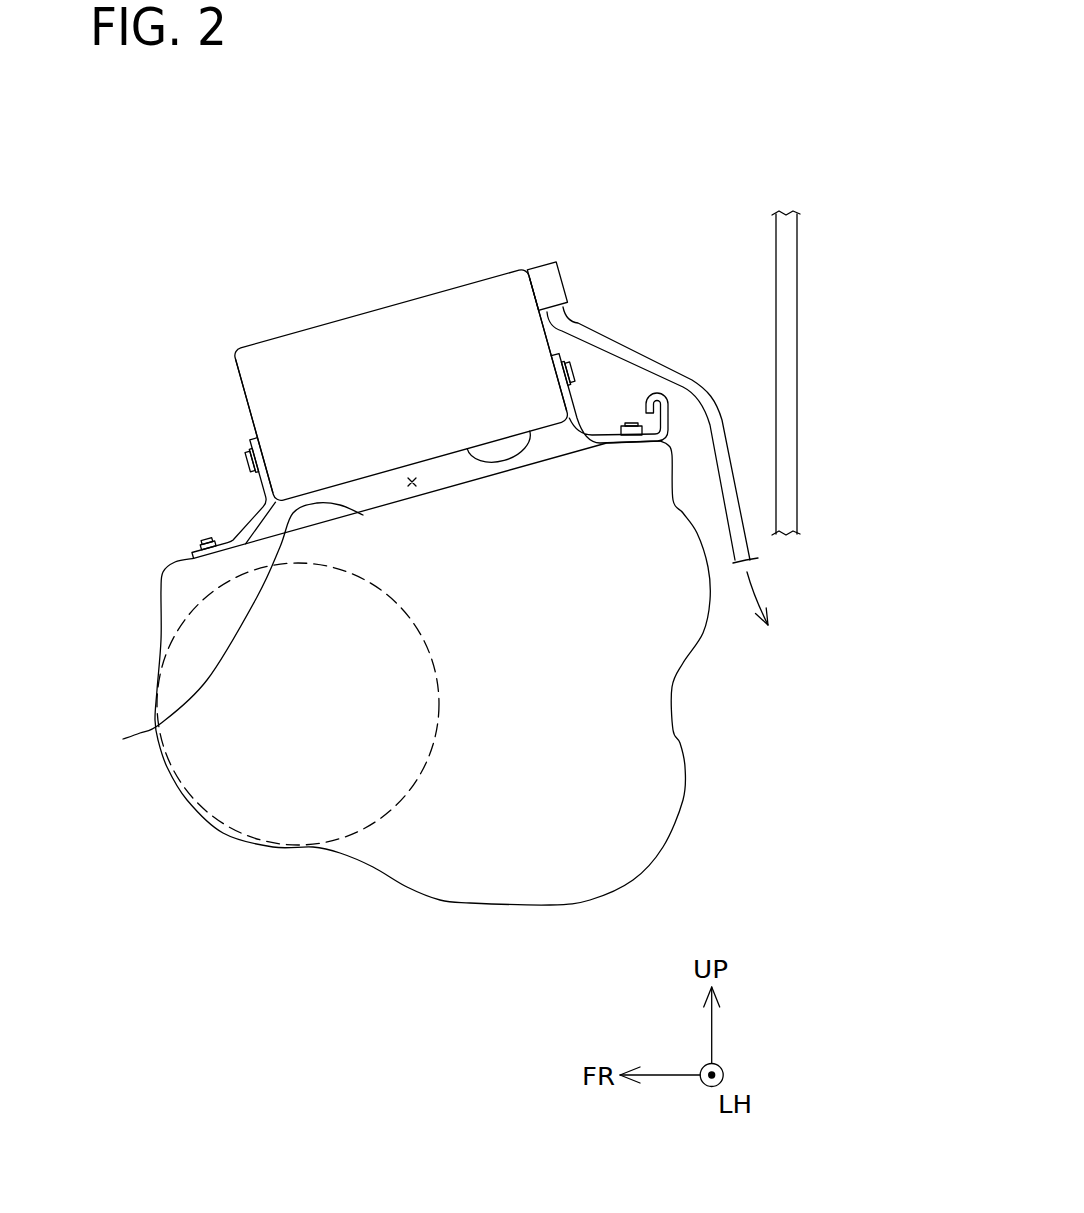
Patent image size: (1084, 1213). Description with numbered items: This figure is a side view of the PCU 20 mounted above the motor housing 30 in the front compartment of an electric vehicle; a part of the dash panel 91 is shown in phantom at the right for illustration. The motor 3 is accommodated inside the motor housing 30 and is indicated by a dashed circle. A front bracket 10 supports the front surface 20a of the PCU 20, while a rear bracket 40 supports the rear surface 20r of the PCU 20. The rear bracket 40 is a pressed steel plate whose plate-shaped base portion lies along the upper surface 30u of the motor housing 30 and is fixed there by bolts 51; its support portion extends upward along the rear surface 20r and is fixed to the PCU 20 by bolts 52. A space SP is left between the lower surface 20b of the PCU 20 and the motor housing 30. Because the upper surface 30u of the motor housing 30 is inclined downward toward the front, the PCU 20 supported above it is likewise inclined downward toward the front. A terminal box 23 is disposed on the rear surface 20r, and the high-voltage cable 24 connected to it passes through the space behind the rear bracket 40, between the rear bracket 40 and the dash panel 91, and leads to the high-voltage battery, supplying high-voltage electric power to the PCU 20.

The motor 3 is at (198, 784).
The front bracket 10 is at (243, 511).
The PCU 20 is at (283, 322).
The front surface 20a is at (240, 397).
The lower surface 20b is at (467, 447).
The rear surface 20r is at (537, 267).
The terminal box 23 is at (547, 285).
The cable 24 is at (563, 323).
The motor housing 30 is at (455, 913).
The upper surface 30u is at (218, 630).
The rear bracket 40 is at (590, 407).
The bolts 51 is at (630, 417).
The bolts 52 is at (573, 373).
The dash panel 91 is at (797, 374).
The space SP is at (412, 478).